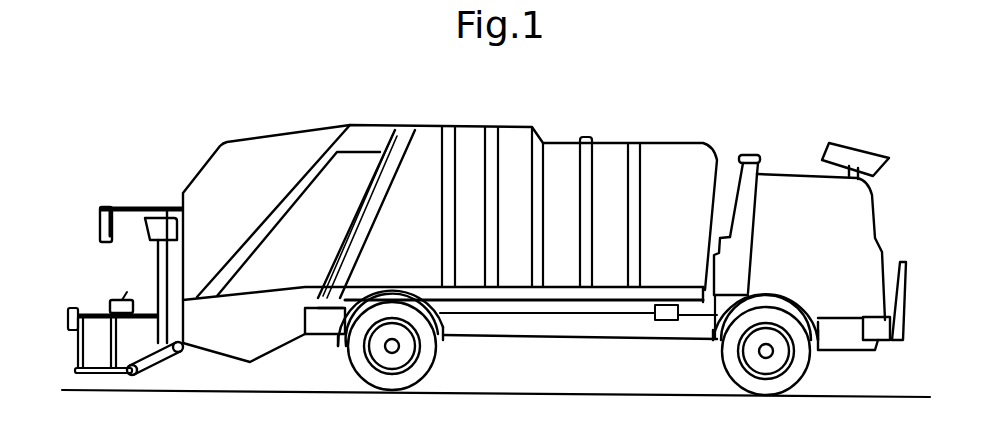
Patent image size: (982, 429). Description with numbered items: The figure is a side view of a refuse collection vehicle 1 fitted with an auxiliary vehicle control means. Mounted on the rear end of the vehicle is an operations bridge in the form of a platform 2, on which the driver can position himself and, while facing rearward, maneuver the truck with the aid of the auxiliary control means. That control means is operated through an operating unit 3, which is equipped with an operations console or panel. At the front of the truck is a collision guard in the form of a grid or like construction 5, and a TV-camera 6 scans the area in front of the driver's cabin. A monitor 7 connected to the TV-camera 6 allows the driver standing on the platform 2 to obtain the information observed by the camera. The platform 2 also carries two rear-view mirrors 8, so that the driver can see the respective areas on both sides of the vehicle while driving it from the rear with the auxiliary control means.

The refuse collection vehicle 1 is at (603, 129).
The platform 2 is at (107, 375).
The operating unit 3 is at (113, 300).
The front collision guard 5 is at (903, 262).
The TV-camera 6 is at (859, 152).
The monitor 7 is at (158, 220).
The rear-view mirrors 8 is at (99, 222).